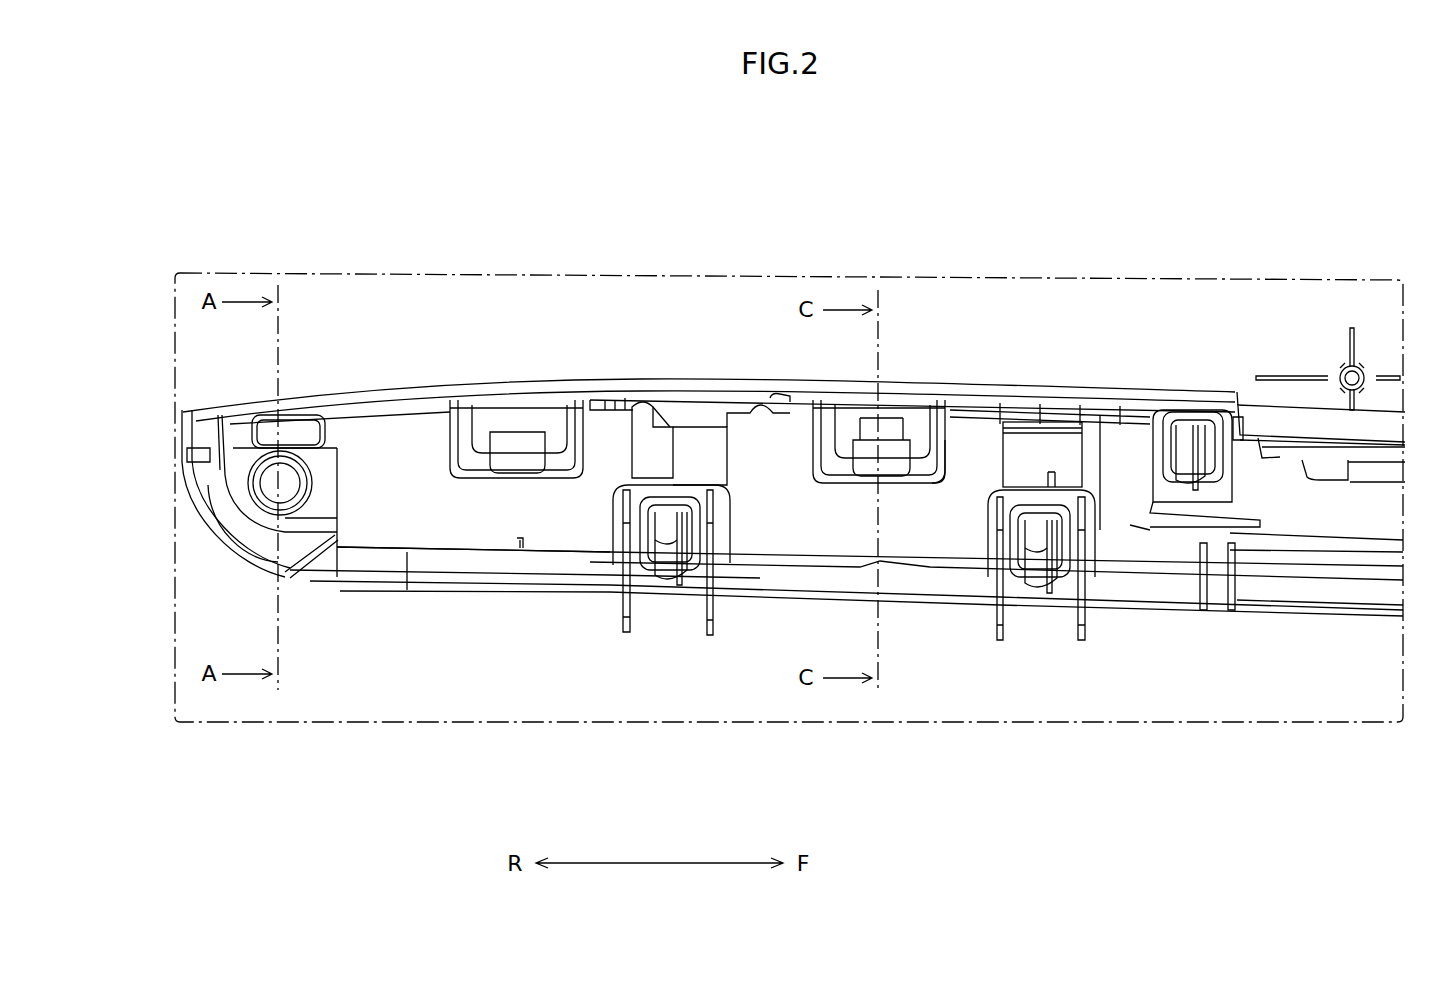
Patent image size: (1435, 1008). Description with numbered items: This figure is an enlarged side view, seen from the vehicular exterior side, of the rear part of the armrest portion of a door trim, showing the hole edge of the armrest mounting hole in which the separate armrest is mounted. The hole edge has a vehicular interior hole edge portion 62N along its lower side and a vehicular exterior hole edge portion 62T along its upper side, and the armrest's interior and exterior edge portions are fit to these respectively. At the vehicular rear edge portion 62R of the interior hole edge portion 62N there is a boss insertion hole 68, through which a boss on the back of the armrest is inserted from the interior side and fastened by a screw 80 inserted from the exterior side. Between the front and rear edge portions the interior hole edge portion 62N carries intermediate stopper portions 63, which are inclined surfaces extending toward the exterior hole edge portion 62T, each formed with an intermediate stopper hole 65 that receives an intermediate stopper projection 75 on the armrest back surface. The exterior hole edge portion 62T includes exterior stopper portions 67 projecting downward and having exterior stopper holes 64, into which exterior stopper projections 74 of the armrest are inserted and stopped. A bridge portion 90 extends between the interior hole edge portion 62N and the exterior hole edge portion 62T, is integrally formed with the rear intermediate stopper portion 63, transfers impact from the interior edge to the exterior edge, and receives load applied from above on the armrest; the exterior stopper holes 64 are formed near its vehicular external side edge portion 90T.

The vehicular rear edge portion 62R is at (210, 468).
The vehicular interior hole edge portion 62N is at (478, 563).
The vehicular exterior hole edge portion 62T is at (605, 400).
The screw 80 is at (268, 482).
The boss insertion hole 68 is at (270, 500).
The exterior stopper projection 74 is at (515, 420).
The vehicular external side edge portion 90T is at (695, 440).
The bridge portion 90 is at (718, 470).
The exterior stopper hole 64 is at (920, 436).
The exterior stopper portion 67 is at (935, 482).
The intermediate stopper portion 63 is at (612, 505).
The intermediate stopper hole 65 is at (648, 568).
The intermediate stopper projection 75 is at (668, 560).